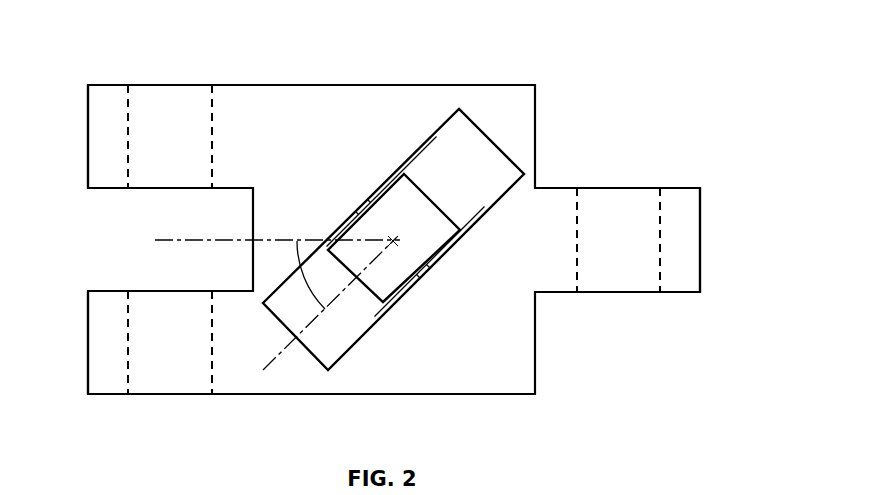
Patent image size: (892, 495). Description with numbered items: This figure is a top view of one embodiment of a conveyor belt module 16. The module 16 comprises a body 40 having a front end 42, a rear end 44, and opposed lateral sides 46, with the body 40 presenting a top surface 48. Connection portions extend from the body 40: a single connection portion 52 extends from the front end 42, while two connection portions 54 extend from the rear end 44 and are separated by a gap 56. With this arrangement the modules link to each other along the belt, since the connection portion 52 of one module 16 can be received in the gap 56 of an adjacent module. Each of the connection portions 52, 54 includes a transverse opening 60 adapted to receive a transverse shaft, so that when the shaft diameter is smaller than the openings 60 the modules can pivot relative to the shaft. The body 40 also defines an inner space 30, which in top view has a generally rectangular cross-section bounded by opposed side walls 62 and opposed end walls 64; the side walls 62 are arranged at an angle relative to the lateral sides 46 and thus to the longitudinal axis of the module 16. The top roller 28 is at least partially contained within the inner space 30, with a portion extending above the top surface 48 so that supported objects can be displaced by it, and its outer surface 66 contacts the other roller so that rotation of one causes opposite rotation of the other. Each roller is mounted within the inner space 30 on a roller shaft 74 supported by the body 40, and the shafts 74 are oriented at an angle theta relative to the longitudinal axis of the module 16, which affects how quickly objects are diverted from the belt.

The conveyor belt module 16 is at (736, 103).
The top roller 28 is at (360, 233).
The inner space 30 is at (349, 326).
The body 40 is at (335, 102).
The front end 42 is at (575, 312).
The rear end 44 is at (228, 273).
The lateral sides 46 is at (474, 82).
The top surface 48 is at (316, 160).
The connection portion 52 is at (680, 212).
The connection portions 54 is at (91, 103).
The gap 56 is at (123, 247).
The transverse opening 60 is at (209, 112).
The side walls 62 is at (417, 142).
The end walls 64 is at (508, 128).
The outer surface 66 is at (427, 227).
The roller shaft 74 is at (426, 279).